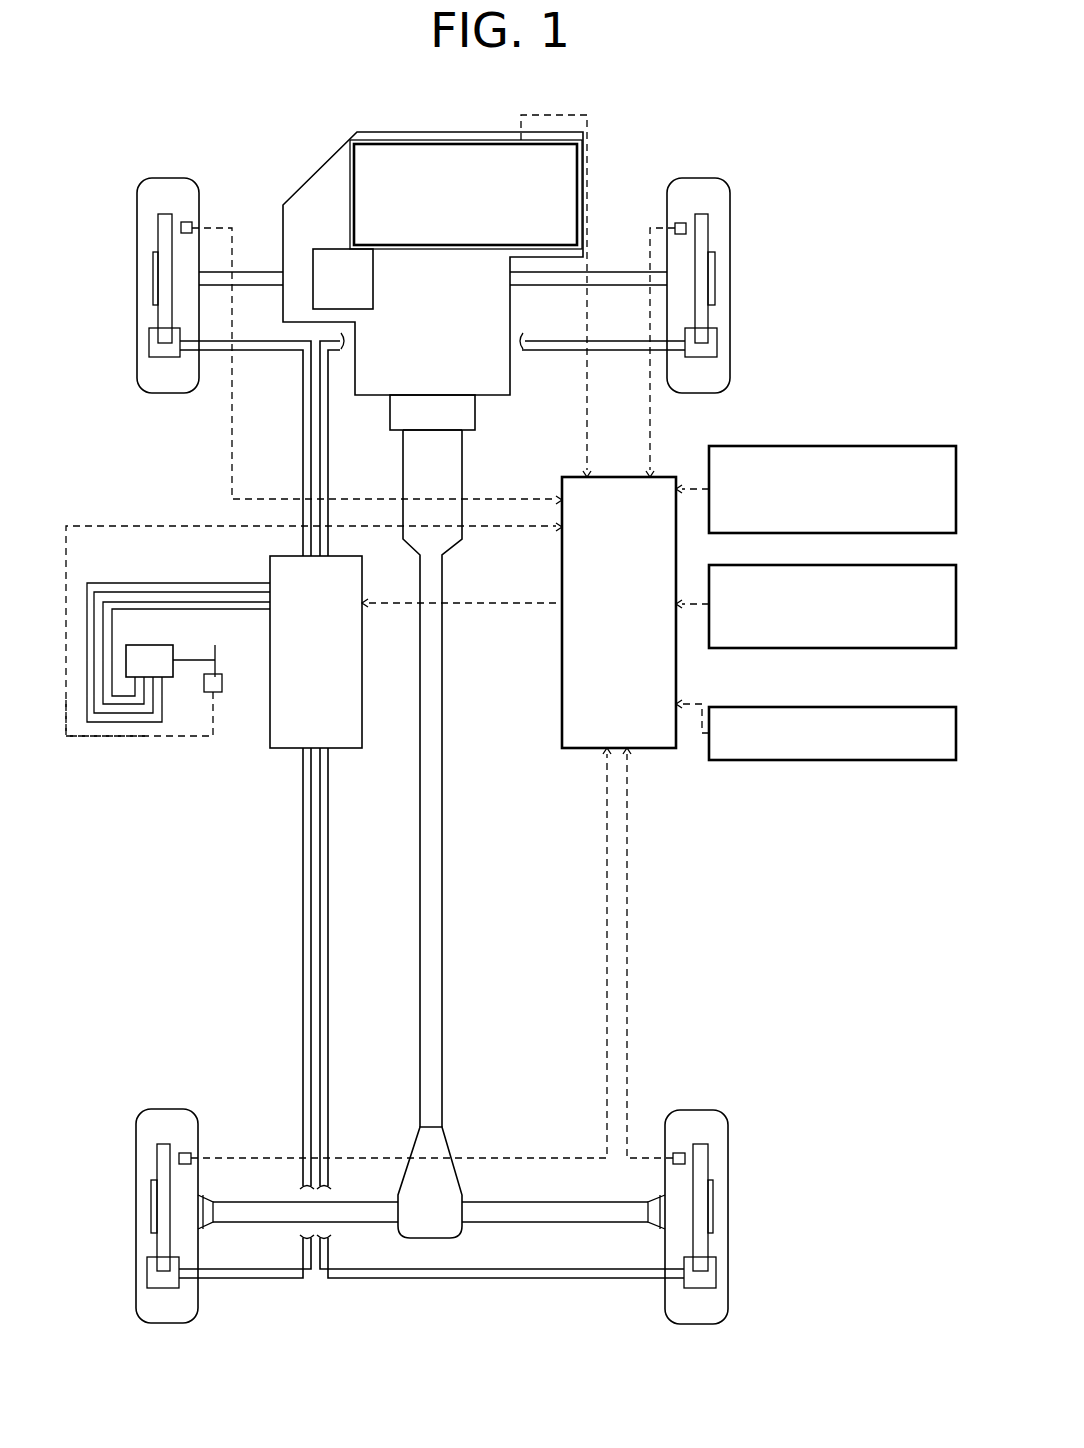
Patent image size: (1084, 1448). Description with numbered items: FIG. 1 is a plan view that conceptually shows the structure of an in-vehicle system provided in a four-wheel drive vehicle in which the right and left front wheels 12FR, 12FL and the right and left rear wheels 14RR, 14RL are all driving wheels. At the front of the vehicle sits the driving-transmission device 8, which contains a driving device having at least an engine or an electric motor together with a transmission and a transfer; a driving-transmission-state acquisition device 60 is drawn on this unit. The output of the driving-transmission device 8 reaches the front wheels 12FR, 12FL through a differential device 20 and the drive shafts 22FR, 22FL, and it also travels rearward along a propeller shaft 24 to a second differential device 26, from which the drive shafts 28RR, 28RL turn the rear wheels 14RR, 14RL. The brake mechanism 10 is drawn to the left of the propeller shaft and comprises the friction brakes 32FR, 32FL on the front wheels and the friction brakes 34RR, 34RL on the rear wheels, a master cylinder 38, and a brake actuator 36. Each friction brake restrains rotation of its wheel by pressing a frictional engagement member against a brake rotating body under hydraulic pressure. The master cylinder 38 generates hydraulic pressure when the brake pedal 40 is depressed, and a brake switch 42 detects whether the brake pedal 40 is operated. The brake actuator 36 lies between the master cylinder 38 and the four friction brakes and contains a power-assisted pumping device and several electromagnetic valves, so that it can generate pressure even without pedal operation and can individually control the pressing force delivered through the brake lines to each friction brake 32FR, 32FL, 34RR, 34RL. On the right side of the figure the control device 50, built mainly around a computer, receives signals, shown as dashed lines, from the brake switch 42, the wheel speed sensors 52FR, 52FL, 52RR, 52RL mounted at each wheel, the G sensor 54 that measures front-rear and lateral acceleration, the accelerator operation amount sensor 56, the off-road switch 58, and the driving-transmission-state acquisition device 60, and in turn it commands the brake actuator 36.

The driving-transmission device 8 is at (408, 120).
The brake mechanism 10 is at (226, 762).
The left front wheel 12FL is at (152, 192).
The right front wheel 12FR is at (713, 192).
The left rear wheel 14RL is at (148, 1120).
The right rear wheel 14RR is at (713, 1110).
The differential device 20 is at (330, 247).
The drive shaft 22FL is at (248, 279).
The drive shaft 22FR is at (615, 282).
The propeller shaft 24 is at (434, 821).
The differential device 26 is at (445, 1193).
The drive shaft 28RL is at (355, 1212).
The drive shaft 28RR is at (595, 1212).
The friction brake 32FL is at (156, 368).
The friction brake 32FR is at (728, 352).
The friction brake 34RL is at (158, 1300).
The friction brake 34RR is at (716, 1291).
The brake actuator 36 is at (355, 719).
The master cylinder 38 is at (135, 652).
The brake pedal 40 is at (218, 668).
The brake switch 42 is at (223, 685).
The control device 50 is at (578, 475).
The wheel speed sensor 52FL is at (188, 222).
The wheel speed sensor 52FR is at (682, 218).
The wheel speed sensor 52RL is at (183, 1150).
The wheel speed sensor 52RR is at (680, 1153).
The acceleration sensor 54 is at (888, 446).
The accelerator operation amount sensor 56 is at (888, 565).
The off-road switch 58 is at (888, 707).
The driving-transmission-state acquisition device 60 is at (480, 139).